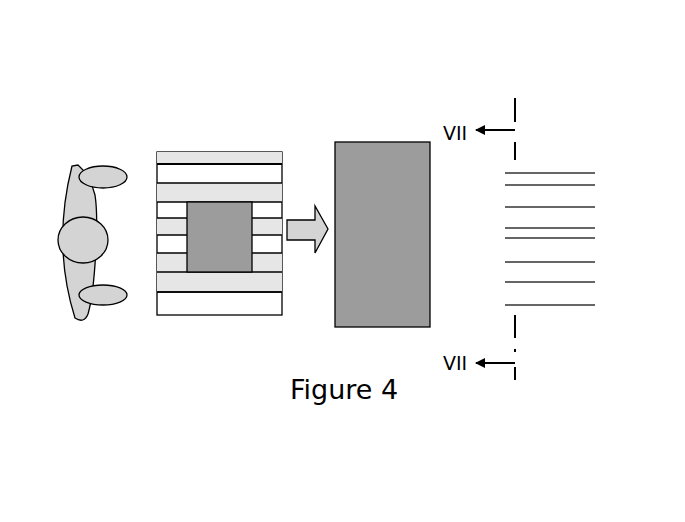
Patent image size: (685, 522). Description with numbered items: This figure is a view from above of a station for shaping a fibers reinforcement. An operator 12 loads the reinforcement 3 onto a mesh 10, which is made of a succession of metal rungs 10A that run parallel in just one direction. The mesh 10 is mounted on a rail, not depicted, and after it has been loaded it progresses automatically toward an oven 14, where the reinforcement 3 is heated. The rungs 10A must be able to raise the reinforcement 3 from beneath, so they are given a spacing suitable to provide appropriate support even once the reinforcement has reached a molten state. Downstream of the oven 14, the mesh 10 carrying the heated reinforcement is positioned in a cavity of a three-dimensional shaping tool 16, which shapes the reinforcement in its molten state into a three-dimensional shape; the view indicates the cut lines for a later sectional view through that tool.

The operator 12 is at (68, 153).
The mesh 10 is at (164, 152).
The reinforcement 3 is at (237, 199).
The metal rungs 10A is at (197, 293).
The oven 14 is at (395, 152).
The 3D shaping tool 16 is at (553, 162).